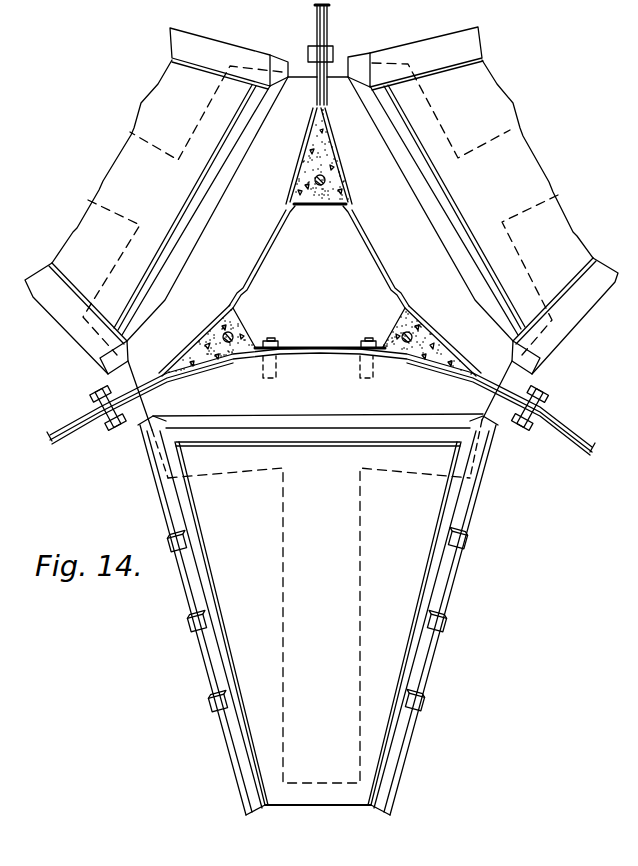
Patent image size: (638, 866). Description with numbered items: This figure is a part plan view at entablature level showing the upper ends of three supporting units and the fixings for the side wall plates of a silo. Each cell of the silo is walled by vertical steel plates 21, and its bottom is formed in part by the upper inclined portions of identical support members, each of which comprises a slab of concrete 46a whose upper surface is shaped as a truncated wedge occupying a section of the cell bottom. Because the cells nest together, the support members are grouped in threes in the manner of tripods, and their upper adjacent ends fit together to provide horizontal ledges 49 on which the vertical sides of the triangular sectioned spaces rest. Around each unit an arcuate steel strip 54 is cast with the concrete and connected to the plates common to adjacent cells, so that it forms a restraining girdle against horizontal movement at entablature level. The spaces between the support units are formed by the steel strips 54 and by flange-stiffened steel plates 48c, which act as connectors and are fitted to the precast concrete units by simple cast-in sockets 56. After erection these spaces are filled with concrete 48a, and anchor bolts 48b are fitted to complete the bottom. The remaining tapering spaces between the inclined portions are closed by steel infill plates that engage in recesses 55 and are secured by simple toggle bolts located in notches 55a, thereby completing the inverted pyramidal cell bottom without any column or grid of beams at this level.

The vertical steel plate 21 is at (577, 431).
The slab of concrete 46a is at (318, 766).
The concrete 48a is at (444, 345).
The anchor bolt 48b is at (328, 182).
The flange-stiffened steel plate 48c is at (327, 208).
The horizontal ledge 49 is at (336, 79).
The arcuate steel strip 54 is at (321, 346).
The recess 55 is at (440, 586).
The notch 55a is at (440, 625).
The cast-in socket 56 is at (263, 371).